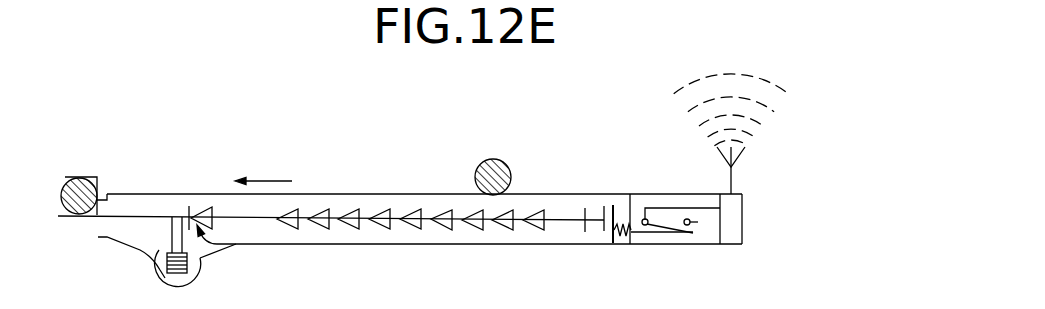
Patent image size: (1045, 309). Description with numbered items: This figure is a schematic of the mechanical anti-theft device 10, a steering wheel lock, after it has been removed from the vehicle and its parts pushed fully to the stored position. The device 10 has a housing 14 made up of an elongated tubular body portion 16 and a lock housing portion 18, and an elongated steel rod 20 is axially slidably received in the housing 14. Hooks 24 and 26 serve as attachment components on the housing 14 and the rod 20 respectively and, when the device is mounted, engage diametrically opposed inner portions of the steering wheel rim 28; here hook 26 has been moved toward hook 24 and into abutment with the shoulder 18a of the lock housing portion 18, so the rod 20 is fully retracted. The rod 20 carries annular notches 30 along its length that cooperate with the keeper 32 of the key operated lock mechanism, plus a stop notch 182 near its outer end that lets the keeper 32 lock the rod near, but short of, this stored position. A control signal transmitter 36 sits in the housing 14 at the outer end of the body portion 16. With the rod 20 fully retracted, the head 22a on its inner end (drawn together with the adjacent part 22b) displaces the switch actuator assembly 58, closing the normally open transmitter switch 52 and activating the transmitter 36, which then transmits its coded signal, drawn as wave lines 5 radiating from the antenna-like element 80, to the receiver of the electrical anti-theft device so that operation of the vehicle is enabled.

The radio signal 5 is at (797, 113).
The mechanical anti-theft device 10 is at (456, 270).
The housing 14 is at (435, 148).
The elongated tubular body portion 16 is at (423, 176).
The lock housing portion 18 is at (220, 271).
The shoulder 18a is at (93, 218).
The elongated steel rod 20 is at (144, 228).
The head 22a is at (603, 235).
The switch contact 22b is at (584, 232).
The hook 24 is at (298, 194).
The hook 26 is at (91, 168).
The steering wheel rim 28 is at (104, 191).
The annular grooves 30 is at (394, 242).
The keeper member 32 is at (170, 240).
The control signal transmitter 36 is at (768, 191).
The control switch 52 is at (679, 258).
The switch actuator assembly 58 is at (631, 183).
The antenna 80 is at (731, 193).
The locking notch 182 is at (242, 244).